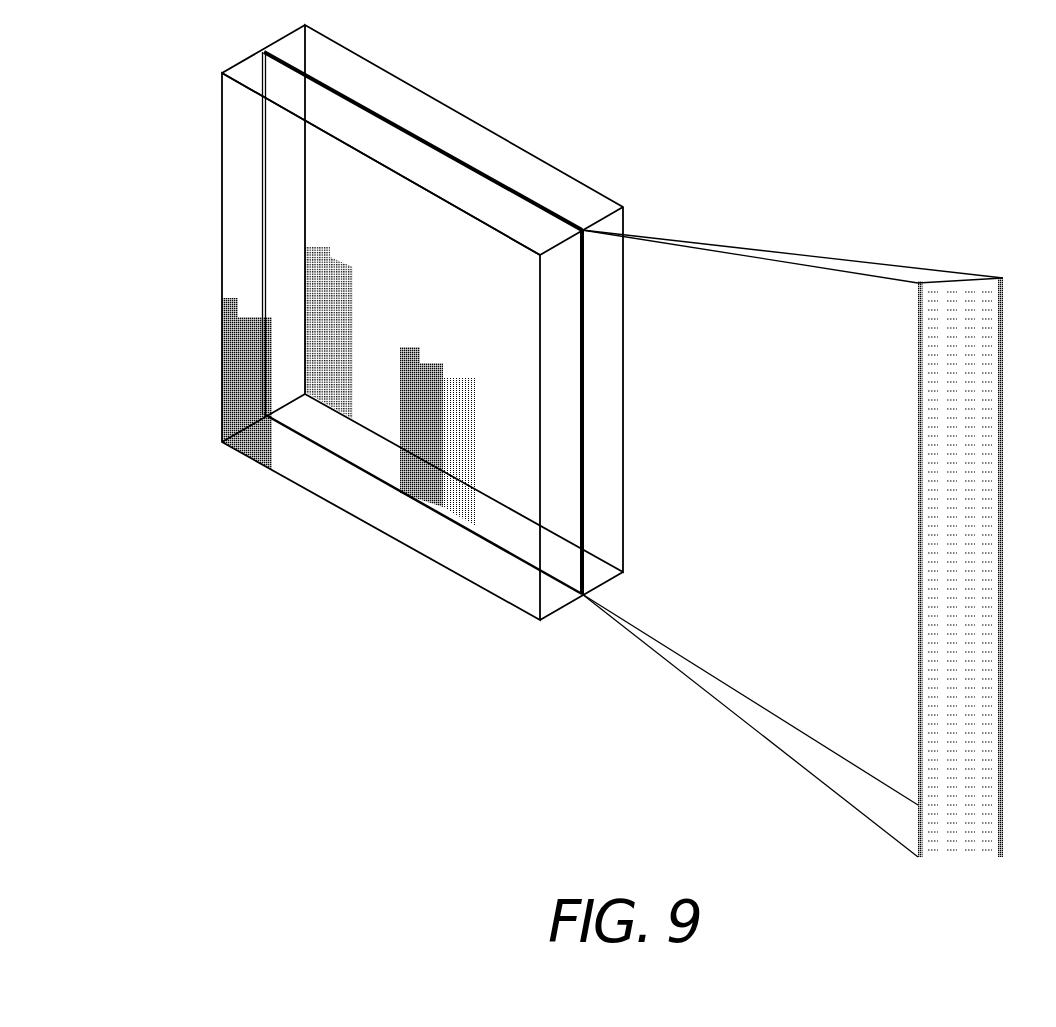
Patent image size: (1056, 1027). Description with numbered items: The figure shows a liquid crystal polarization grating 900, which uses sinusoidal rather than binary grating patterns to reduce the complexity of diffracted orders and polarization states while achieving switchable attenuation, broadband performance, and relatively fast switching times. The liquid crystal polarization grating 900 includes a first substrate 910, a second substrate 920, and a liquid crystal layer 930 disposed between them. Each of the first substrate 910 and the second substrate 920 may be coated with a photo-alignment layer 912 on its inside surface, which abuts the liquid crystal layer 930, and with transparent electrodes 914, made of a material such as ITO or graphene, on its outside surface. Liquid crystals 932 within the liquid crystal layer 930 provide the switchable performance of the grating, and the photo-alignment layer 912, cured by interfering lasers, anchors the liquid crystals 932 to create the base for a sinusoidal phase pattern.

The liquid crystal polarization grating 900 is at (114, 74).
The first substrate 910 is at (343, 500).
The photo-alignment layer 912 is at (457, 397).
The transparent electrodes 914 is at (333, 272).
The second substrate 920 is at (490, 147).
The liquid crystal layer 930 is at (547, 210).
The liquid crystals 932 is at (965, 327).